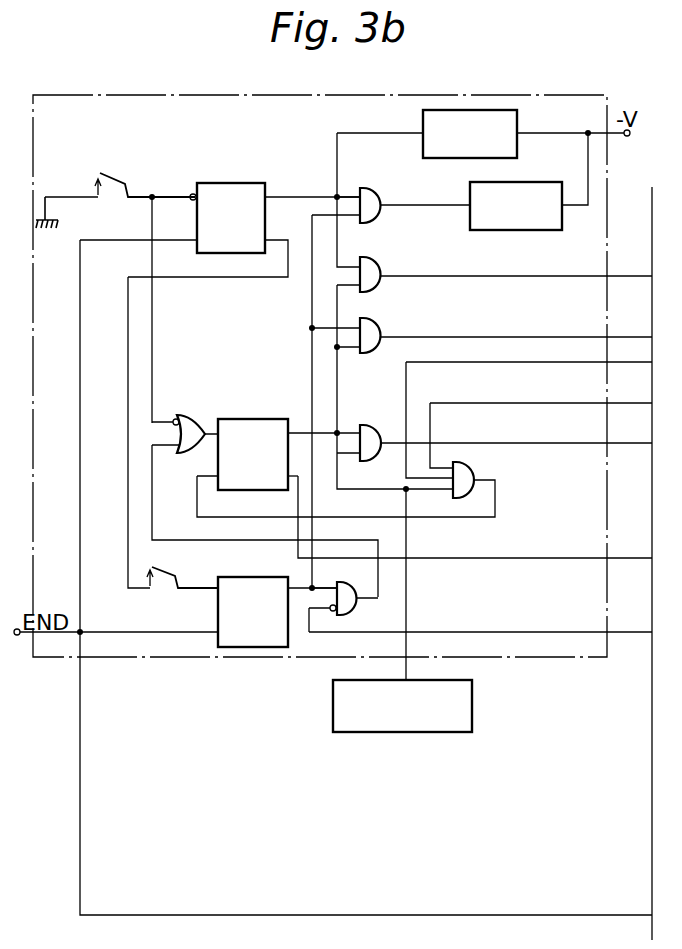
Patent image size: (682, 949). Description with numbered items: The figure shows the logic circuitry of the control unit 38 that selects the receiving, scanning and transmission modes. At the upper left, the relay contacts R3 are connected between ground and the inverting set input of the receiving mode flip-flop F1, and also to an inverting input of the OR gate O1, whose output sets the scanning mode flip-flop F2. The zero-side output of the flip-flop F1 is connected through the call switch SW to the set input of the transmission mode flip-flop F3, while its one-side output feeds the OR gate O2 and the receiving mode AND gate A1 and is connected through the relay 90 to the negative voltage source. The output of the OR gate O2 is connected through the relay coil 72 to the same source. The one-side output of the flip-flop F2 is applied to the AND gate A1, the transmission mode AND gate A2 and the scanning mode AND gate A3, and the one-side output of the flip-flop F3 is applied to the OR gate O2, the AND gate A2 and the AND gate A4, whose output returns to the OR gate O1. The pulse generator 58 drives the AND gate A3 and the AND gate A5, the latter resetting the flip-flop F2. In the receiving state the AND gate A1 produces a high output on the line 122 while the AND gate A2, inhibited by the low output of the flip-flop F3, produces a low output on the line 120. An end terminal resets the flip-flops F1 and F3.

The control unit 38 is at (33, 170).
The relay contacts R3 is at (145, 174).
The receiving mode flip-flop F1 is at (245, 171).
The OR gate O2 is at (370, 188).
The relay 90 is at (517, 113).
The relay coil 72 is at (537, 182).
The receiving mode AND gate A1 is at (381, 247).
The line 122 is at (463, 276).
The transmission mode AND gate A2 is at (372, 318).
The line 120 is at (491, 337).
The OR gate O1 is at (186, 414).
The scanning mode flip-flop F2 is at (252, 419).
The scanning mode AND gate A3 is at (372, 425).
The AND gate A5 is at (471, 466).
The call switch SW is at (182, 565).
The transmission mode flip-flop F3 is at (243, 577).
The AND gate A4 is at (343, 582).
The pulse generator 58 is at (472, 703).